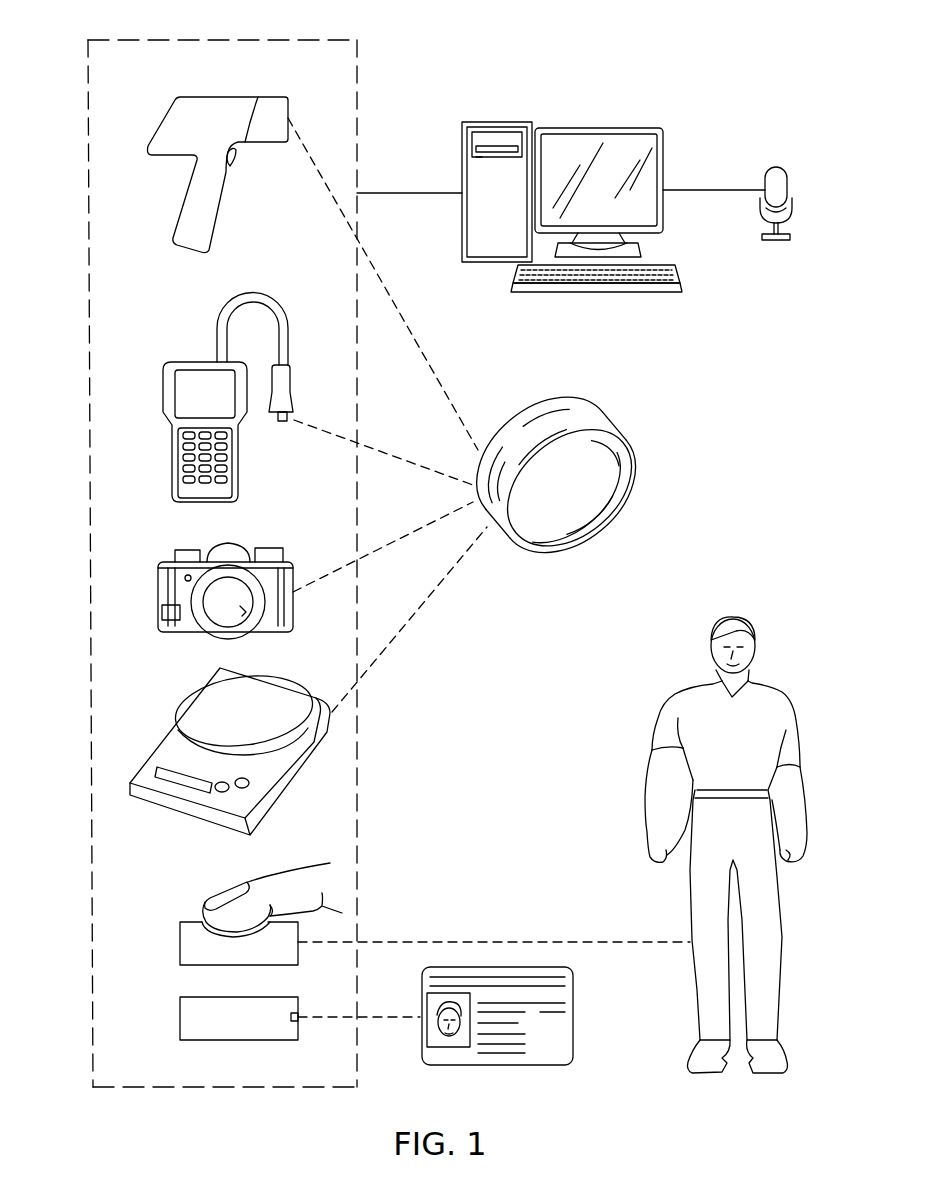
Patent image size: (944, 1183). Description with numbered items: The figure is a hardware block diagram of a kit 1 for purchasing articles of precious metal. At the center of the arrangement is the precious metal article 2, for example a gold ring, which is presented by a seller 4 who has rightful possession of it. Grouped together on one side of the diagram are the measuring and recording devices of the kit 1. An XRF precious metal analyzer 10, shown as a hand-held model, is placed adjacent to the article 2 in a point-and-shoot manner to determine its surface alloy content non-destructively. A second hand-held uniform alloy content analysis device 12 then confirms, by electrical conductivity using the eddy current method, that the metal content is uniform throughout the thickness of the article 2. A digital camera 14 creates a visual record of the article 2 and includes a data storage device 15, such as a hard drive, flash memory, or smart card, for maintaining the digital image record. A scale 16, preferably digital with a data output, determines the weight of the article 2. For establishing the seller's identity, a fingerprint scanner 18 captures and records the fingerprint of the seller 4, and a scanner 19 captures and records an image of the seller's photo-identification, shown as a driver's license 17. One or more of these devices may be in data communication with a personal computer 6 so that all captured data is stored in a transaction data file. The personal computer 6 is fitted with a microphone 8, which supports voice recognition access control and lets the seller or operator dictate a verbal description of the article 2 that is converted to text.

The kit 1 is at (368, 73).
The precious metal article 2 is at (622, 498).
The seller 4 is at (672, 697).
The personal computer 6 is at (616, 128).
The microphone 8 is at (785, 170).
The XRF precious metal analyzer 10 is at (178, 104).
The hand-held uniform alloy content analysis device 12 is at (183, 362).
The digital camera 14 is at (158, 583).
The data storage device 15 is at (162, 612).
The scale 16 is at (155, 808).
The driver's license 17 is at (548, 1066).
The fingerprint scanner 18 is at (180, 940).
The scanner 19 is at (180, 1013).